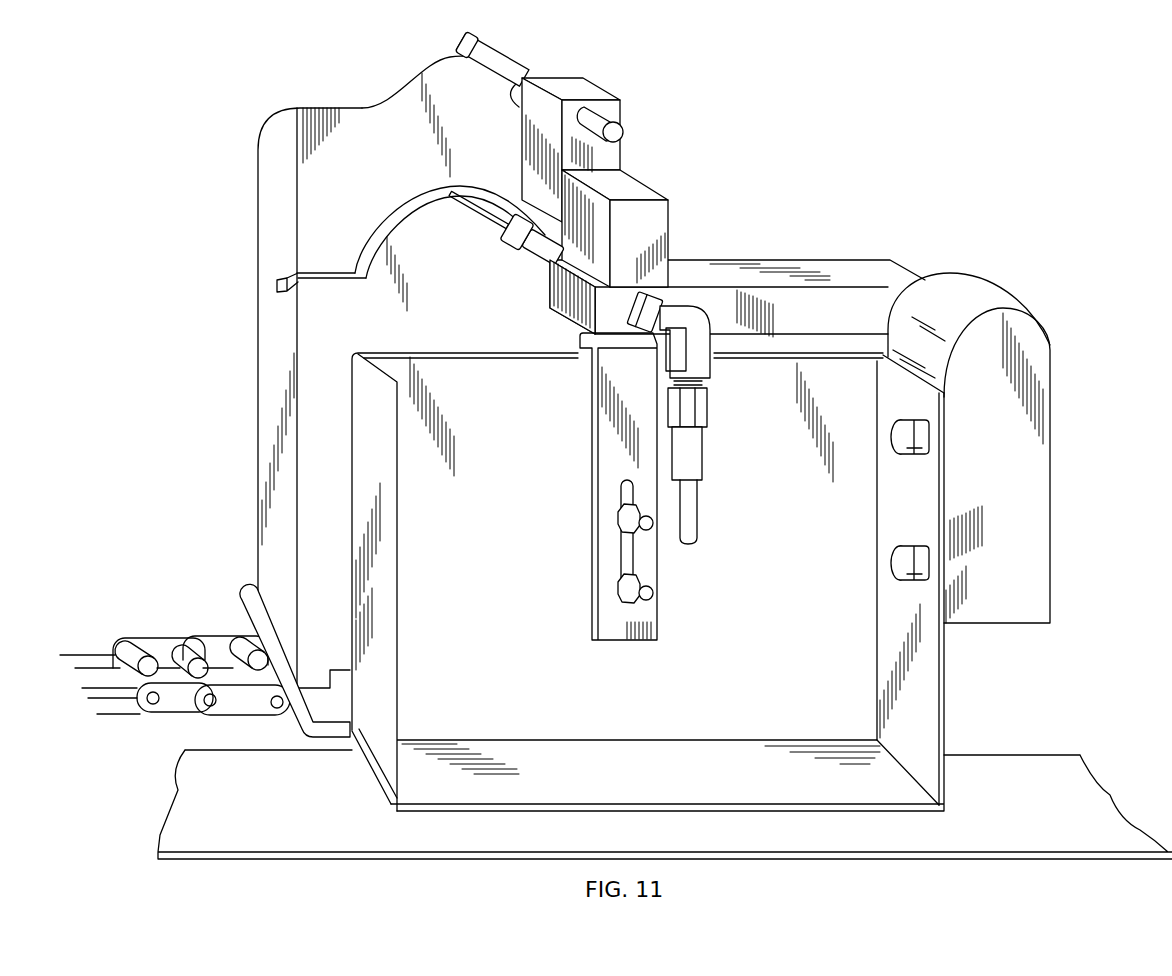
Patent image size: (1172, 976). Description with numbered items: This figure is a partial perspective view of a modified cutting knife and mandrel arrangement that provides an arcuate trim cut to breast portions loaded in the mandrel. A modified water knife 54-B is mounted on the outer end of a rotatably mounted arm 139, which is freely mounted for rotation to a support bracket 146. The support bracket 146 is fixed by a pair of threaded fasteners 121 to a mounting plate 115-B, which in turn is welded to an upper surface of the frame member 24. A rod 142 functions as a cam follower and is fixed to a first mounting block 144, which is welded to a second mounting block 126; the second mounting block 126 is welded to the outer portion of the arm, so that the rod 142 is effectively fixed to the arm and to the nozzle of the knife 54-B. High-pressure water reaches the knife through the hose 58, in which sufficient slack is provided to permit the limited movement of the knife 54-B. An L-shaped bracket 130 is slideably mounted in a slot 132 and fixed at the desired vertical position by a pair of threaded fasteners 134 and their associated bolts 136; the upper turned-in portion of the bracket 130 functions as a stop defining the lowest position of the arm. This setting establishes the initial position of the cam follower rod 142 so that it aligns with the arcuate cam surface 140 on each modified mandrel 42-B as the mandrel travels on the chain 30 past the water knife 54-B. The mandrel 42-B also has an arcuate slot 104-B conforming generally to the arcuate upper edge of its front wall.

The upper beam 24 is at (1030, 768).
The continuous chain 30 is at (157, 640).
The modified mandrel 42-B is at (250, 223).
The modified water knife 54-B is at (533, 262).
The hose 58 is at (697, 498).
The arcuate slot 104-B is at (282, 280).
The mounting plate 115-B is at (943, 688).
The threaded fasteners 121 is at (905, 583).
The second mounting block 126 is at (668, 215).
The L-shaped bracket 130 is at (593, 395).
The slot 132 is at (627, 547).
The threaded fasteners 134 is at (648, 597).
The bolts 136 is at (620, 583).
The rotatably mounted arm 139 is at (818, 263).
The arcuate cam surface 140 is at (415, 70).
The rod 142 is at (507, 53).
The first mounting block 144 is at (622, 105).
The support bracket 146 is at (1052, 412).